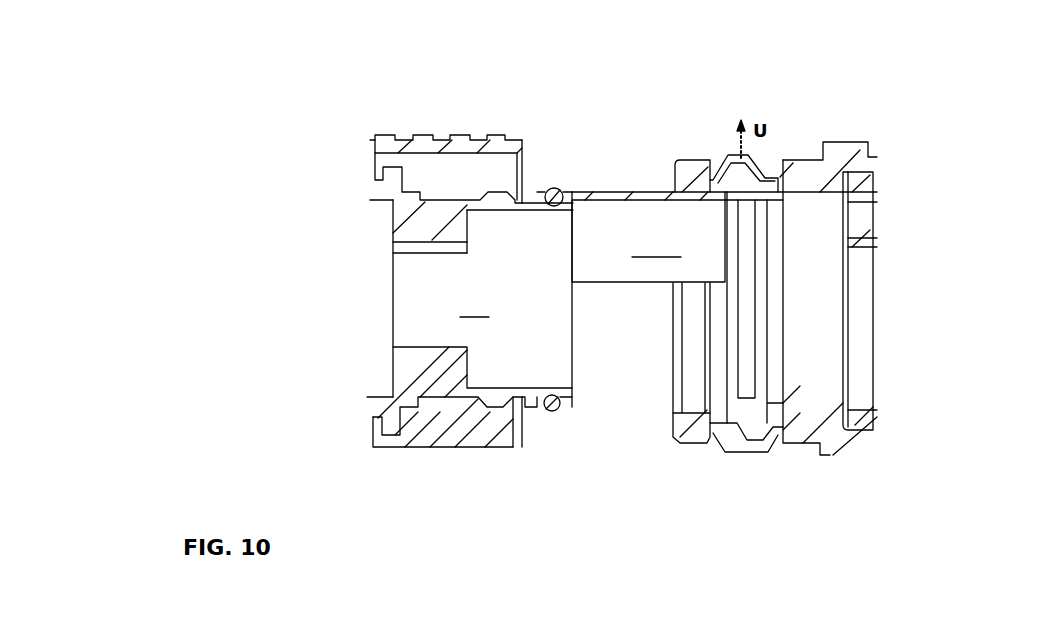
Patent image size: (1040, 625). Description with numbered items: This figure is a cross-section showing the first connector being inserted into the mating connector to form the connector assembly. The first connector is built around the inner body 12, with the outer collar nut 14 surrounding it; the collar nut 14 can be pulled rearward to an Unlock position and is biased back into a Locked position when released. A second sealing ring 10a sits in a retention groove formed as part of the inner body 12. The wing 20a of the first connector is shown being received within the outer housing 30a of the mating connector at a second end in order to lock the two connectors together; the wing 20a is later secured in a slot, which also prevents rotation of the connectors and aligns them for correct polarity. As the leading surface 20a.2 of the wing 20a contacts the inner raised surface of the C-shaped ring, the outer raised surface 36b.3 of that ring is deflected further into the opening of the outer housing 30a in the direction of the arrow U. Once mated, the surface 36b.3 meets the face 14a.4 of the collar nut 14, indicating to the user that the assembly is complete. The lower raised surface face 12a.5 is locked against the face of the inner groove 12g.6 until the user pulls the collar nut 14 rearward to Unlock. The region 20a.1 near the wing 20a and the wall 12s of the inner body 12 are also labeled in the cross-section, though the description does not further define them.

The outer collar nut 14 is at (414, 140).
The face 14a.4 is at (532, 131).
The sealing layer 20a.1 is at (602, 183).
The outer raised surface 36b.3 is at (719, 148).
The outer housing 30a is at (836, 167).
The wing 20a is at (648, 241).
The inner body 12 is at (475, 305).
The leading surface 20a.2 is at (736, 197).
The housing wall 12s is at (734, 306).
The lower raised surface face 12a.5 is at (471, 404).
The second sealing ring 10a is at (558, 422).
The inner groove face 12g.6 is at (762, 411).